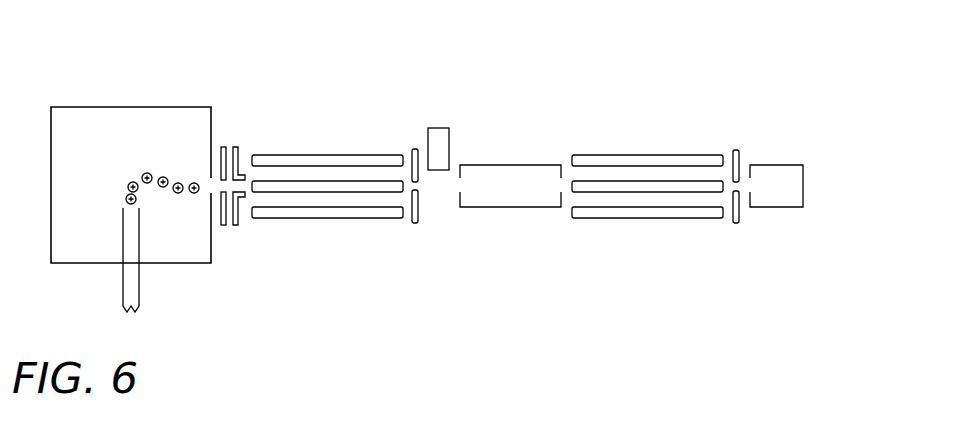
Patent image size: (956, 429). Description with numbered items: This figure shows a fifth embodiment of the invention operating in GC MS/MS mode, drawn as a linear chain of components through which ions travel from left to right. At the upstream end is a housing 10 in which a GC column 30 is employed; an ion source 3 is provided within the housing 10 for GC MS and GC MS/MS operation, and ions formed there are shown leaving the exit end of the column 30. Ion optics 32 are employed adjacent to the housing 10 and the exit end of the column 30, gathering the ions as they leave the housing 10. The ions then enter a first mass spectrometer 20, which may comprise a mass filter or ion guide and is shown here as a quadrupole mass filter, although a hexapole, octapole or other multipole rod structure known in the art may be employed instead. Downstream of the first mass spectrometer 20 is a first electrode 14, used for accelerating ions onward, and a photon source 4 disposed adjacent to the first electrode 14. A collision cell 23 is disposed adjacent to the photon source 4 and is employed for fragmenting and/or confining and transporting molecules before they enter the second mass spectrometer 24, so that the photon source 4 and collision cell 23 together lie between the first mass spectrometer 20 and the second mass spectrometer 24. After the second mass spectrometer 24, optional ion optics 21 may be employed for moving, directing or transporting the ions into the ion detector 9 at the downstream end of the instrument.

The housing 10 is at (133, 107).
The ion source 3 is at (89, 165).
The GC column 30 is at (134, 287).
The ion optics 32 is at (232, 147).
The first mass spectrometer 20 is at (328, 155).
The first electrode 14 is at (414, 227).
The photon source 4 is at (437, 128).
The collision cell 23 is at (508, 207).
The second mass spectrometer 24 is at (650, 155).
The ion optics 21 is at (738, 150).
The ion detector 9 is at (790, 165).